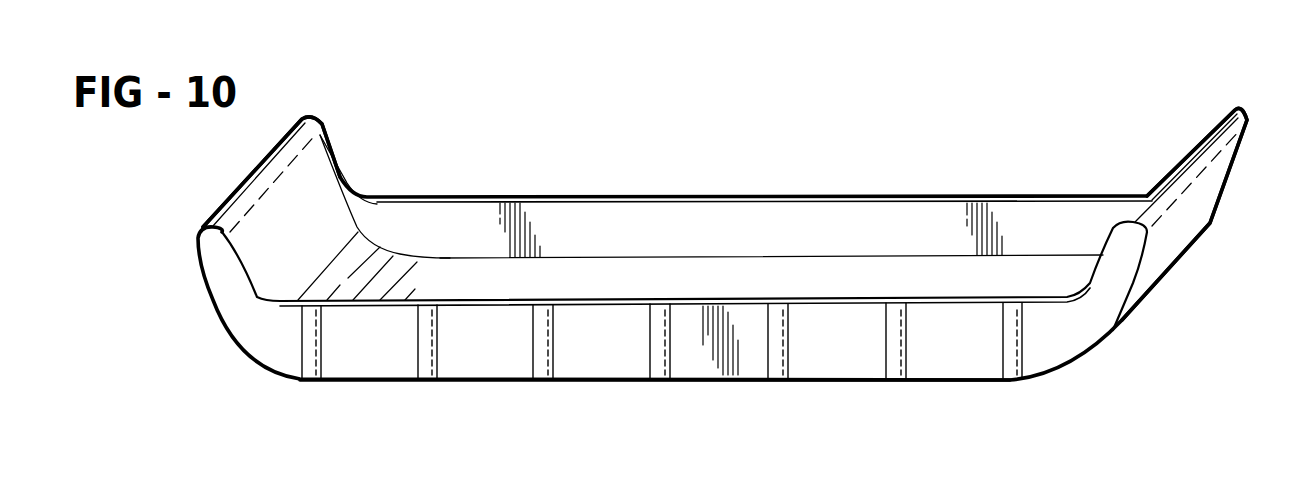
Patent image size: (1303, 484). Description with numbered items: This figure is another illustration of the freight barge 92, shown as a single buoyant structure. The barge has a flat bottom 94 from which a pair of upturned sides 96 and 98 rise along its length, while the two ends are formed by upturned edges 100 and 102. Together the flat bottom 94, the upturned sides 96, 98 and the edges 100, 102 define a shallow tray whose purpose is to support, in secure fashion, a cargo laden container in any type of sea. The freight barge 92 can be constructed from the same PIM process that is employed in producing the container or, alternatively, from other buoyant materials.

The freight barge 92 is at (622, 183).
The flat bottom 94 is at (855, 380).
The upturned side 96 is at (1040, 218).
The upturned side 98 is at (845, 320).
The edge 100 is at (217, 263).
The edge 102 is at (1176, 231).